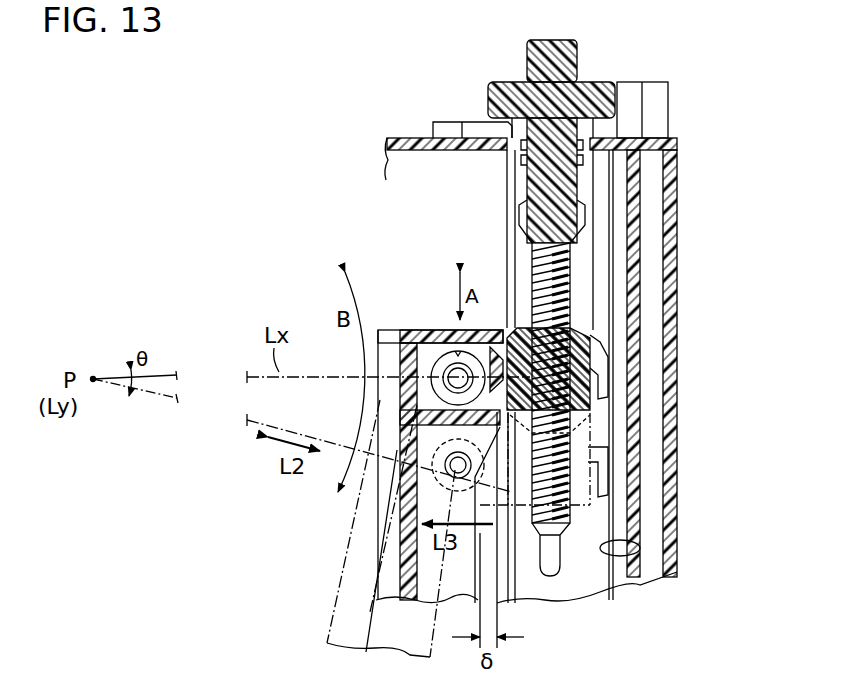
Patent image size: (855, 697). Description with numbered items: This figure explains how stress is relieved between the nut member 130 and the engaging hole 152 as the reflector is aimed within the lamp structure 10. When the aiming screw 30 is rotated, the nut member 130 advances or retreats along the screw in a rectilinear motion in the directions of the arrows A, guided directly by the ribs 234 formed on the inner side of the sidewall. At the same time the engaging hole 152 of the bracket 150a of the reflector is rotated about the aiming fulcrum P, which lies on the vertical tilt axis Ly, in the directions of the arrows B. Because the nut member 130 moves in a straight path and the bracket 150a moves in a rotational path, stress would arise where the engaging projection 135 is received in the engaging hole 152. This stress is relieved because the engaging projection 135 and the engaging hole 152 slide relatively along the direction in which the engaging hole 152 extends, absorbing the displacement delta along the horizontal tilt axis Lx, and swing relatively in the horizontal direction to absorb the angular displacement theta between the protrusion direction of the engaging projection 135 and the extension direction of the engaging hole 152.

The housing 10 is at (677, 480).
The aiming screw 30 is at (577, 280).
The nut member 130 is at (596, 378).
The ribs 234 is at (640, 548).
The engaging projection 135 is at (382, 333).
The engaging hole 152 is at (452, 333).
The bracket 150a is at (438, 356).